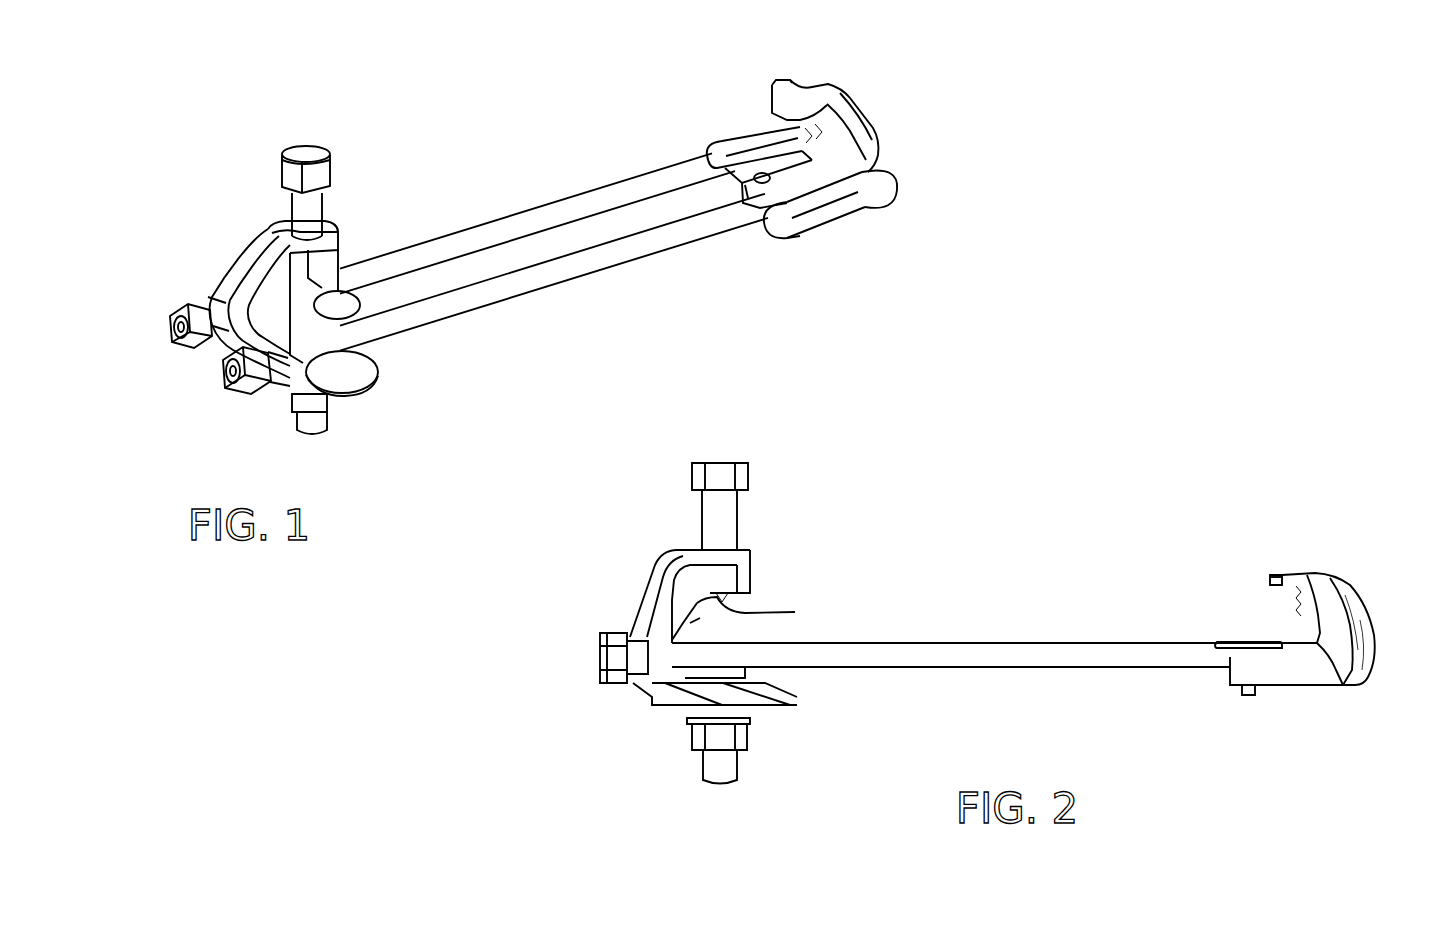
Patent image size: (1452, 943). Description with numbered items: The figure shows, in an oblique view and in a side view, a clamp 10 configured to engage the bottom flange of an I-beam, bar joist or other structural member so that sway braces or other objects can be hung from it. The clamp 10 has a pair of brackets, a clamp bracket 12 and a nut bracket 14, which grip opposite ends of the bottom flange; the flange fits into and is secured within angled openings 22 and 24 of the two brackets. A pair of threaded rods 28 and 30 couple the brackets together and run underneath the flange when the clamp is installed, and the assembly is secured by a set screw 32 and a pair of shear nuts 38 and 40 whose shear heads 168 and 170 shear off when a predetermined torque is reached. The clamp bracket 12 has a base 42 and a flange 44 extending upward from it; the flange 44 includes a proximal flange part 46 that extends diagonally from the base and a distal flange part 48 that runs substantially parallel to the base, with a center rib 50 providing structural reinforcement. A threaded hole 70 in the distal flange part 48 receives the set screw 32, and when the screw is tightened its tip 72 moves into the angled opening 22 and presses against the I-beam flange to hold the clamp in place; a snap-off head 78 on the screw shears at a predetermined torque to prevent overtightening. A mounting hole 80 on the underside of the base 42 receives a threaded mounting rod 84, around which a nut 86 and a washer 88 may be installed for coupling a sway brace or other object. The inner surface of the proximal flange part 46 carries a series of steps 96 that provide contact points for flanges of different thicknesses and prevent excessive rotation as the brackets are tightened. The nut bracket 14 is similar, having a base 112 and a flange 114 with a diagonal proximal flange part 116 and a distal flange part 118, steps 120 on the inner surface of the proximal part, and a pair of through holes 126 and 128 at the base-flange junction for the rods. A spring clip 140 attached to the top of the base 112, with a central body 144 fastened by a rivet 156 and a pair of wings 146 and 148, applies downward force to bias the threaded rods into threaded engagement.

In FIG. 1, the clamp 10 is at (466, 116).
In FIG. 2, the clamp 10 is at (949, 456).
In FIG. 1, the clamp bracket 12 is at (230, 290).
In FIG. 2, the clamp bracket 12 is at (644, 603).
In FIG. 1, the nut bracket 14 is at (886, 170).
In FIG. 2, the nut bracket 14 is at (1295, 647).
In FIG. 2, the angled opening 22 is at (789, 603).
In FIG. 2, the angled opening 24 is at (1231, 601).
In FIG. 1, the threaded rod 28 is at (512, 232).
In FIG. 2, the threaded rod 28 is at (1000, 650).
In FIG. 1, the threaded rod 30 is at (503, 292).
In FIG. 1, the set screw 32 is at (318, 206).
In FIG. 2, the set screw 32 is at (731, 521).
In FIG. 1, the shear nut 38 is at (208, 305).
In FIG. 2, the shear nut 38 is at (582, 685).
In FIG. 1, the shear nut 40 is at (272, 367).
In FIG. 2, the shear nut 40 is at (635, 671).
In FIG. 1, the base 42 is at (324, 364).
In FIG. 2, the base 42 is at (725, 680).
In FIG. 1, the flange 44 is at (230, 290).
In FIG. 2, the flange 44 is at (644, 625).
In FIG. 2, the proximal flange part 46 is at (665, 622).
In FIG. 2, the distal flange part 48 is at (728, 578).
In FIG. 1, the center rib 50 is at (262, 248).
In FIG. 2, the center rib 50 is at (691, 625).
In FIG. 1, the threaded hole 70 is at (278, 209).
In FIG. 2, the threaded hole 70 is at (688, 535).
In FIG. 2, the tip 72 is at (716, 608).
In FIG. 1, the snap-off head 78 is at (291, 152).
In FIG. 2, the snap-off head 78 is at (749, 474).
In FIG. 2, the mounting hole 80 is at (724, 780).
In FIG. 2, the threaded mounting rod 84 is at (729, 774).
In FIG. 2, the nut 86 is at (744, 743).
In FIG. 2, the washer 88 is at (754, 721).
In FIG. 2, the steps 96 is at (694, 625).
In FIG. 1, the base 112 is at (844, 234).
In FIG. 2, the base 112 is at (1283, 698).
In FIG. 1, the flange 114 is at (886, 118).
In FIG. 2, the flange 114 is at (1364, 590).
In FIG. 2, the proximal flange part 116 is at (1328, 613).
In FIG. 2, the distal flange part 118 is at (1282, 576).
In FIG. 2, the steps 120 is at (1294, 608).
In FIG. 1, the through hole 126 is at (853, 160).
In FIG. 2, the through hole 126 is at (1360, 677).
In FIG. 1, the through hole 128 is at (863, 191).
In FIG. 2, the through hole 128 is at (1384, 658).
In FIG. 1, the spring clip 140 is at (720, 179).
In FIG. 1, the central body 144 is at (703, 183).
In FIG. 1, the wing 146 is at (735, 142).
In FIG. 1, the wing 148 is at (767, 216).
In FIG. 1, the rivet 156 is at (760, 172).
In FIG. 1, the shear head 168 is at (175, 340).
In FIG. 1, the shear head 170 is at (228, 373).